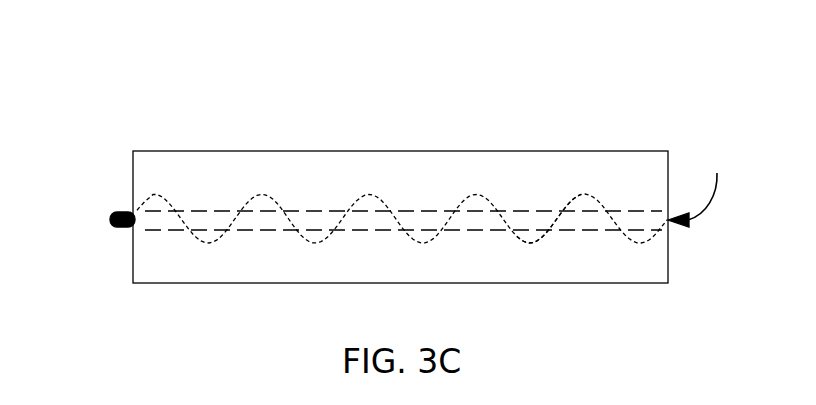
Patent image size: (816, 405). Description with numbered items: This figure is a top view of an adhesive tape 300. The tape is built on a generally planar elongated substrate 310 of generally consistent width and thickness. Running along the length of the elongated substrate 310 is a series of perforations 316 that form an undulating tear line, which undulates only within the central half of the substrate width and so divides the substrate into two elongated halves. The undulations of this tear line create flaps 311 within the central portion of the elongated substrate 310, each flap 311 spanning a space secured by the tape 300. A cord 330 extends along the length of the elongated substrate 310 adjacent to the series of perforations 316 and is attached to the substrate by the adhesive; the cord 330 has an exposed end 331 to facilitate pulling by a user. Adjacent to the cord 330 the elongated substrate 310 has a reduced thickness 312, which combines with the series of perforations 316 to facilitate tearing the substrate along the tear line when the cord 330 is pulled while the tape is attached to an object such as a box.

The adhesive tape 300 is at (118, 90).
The elongated substrate 310 is at (313, 165).
The flaps 311 is at (428, 220).
The reduced thickness 312 is at (262, 208).
The series of perforations 316 is at (543, 202).
The cord 330 is at (699, 188).
The exposed end 331 is at (117, 212).